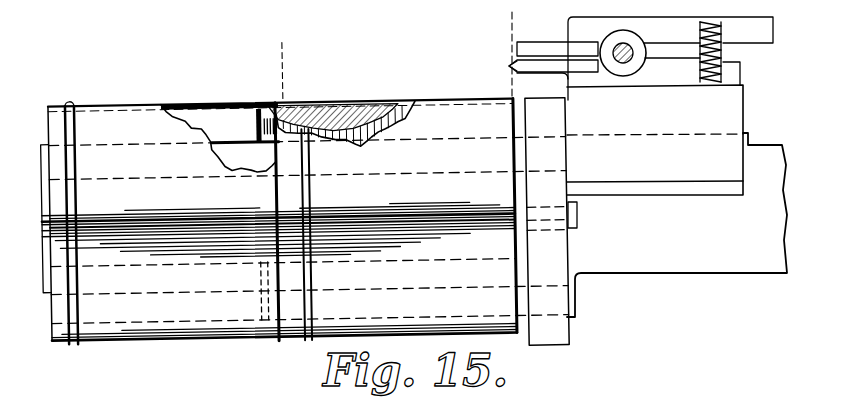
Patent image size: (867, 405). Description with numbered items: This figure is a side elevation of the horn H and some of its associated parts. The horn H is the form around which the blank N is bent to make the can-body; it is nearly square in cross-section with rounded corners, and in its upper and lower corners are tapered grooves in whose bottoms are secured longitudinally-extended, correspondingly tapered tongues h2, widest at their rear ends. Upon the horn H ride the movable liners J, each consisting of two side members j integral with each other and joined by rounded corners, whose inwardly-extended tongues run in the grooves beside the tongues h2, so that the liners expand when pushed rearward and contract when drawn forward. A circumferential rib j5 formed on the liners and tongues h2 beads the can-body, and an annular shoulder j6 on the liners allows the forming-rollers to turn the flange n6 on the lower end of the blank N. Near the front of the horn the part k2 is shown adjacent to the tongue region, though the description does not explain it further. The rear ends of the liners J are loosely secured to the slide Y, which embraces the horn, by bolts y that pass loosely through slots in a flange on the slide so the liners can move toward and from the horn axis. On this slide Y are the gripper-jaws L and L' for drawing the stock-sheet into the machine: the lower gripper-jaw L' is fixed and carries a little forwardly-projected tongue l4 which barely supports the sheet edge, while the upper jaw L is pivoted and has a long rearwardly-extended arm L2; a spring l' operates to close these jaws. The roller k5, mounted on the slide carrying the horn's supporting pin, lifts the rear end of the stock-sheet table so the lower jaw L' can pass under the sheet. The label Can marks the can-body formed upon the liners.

The upper gripper-jaw L is at (608, 46).
The lower gripper-jaw L' is at (553, 79).
The rearwardly-extended arm L2 is at (670, 58).
The forwardly-projected tongue l4 is at (508, 65).
The spring l' is at (733, 52).
The slide Y is at (677, 201).
The bolts y is at (577, 220).
The side members j is at (307, 125).
The liners J is at (305, 274).
The circumferential rib j5 is at (307, 340).
The annular shoulder j6 is at (515, 336).
The horn H is at (220, 138).
The roller k5 is at (299, 102).
The cavity lining k2 is at (402, 104).
The tongues h2 is at (265, 319).
The flange n6 is at (278, 338).
The blank N is at (103, 233).
The can Can is at (106, 223).